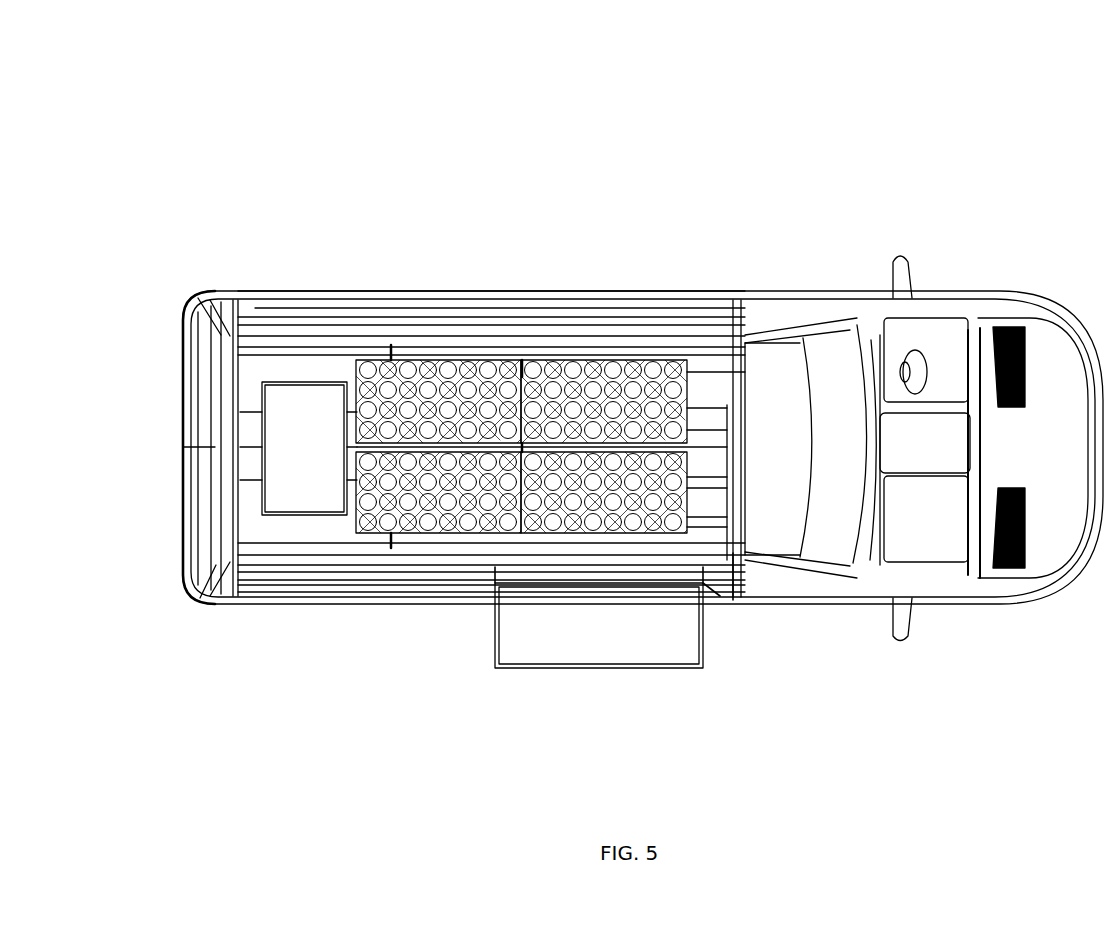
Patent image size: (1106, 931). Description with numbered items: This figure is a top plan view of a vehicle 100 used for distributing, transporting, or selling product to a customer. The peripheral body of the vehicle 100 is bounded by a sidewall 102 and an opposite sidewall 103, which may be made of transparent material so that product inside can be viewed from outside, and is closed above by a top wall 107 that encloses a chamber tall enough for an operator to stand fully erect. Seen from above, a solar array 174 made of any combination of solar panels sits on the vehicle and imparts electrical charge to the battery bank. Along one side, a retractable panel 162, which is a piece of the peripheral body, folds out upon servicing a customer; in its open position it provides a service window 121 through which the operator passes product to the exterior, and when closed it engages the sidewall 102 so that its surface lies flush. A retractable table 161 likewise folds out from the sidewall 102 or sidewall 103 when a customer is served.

The vehicle 100 is at (913, 224).
The sidewall 102 is at (458, 290).
The sidewall 103 is at (296, 585).
The top wall 107 is at (690, 430).
The service window 121 is at (703, 600).
The retractable table 161 is at (492, 660).
The retractable panel 162 is at (606, 627).
The solar array 174 is at (441, 400).